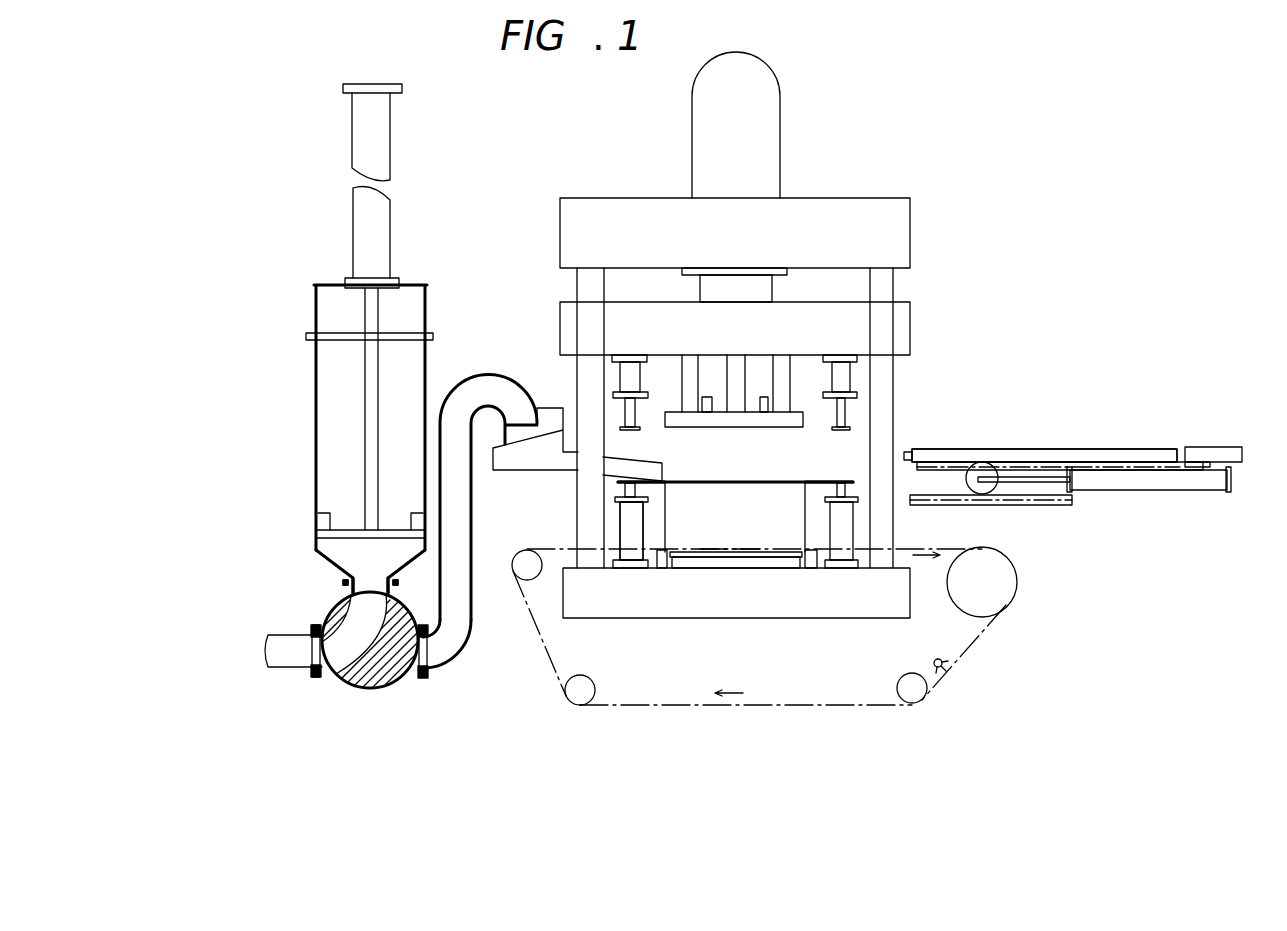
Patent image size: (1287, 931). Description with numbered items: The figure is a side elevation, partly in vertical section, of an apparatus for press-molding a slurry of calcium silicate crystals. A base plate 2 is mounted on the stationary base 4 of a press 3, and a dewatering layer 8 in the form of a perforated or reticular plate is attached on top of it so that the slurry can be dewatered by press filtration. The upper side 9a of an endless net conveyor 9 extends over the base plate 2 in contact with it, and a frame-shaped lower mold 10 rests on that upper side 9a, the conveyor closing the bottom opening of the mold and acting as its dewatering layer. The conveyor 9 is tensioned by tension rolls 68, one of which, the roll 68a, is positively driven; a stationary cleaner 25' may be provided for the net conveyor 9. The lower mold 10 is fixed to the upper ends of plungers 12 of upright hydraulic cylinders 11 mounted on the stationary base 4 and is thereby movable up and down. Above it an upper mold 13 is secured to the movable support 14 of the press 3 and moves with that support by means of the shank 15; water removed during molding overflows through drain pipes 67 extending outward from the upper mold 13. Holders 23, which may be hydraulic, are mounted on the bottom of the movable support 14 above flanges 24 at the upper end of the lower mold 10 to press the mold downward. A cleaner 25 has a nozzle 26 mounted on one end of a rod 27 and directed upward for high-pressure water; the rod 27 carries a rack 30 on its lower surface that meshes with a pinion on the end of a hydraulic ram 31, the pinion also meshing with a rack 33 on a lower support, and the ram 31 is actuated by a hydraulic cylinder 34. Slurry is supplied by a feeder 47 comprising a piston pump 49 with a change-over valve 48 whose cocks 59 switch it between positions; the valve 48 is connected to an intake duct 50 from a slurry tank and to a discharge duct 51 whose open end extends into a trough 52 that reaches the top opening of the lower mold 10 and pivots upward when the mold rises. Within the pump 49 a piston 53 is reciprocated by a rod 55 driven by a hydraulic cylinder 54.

The base plate 2 is at (688, 552).
The press 3 is at (827, 196).
The stationary base 4 is at (752, 607).
The dewatering layer 8 is at (787, 539).
The net conveyor 9 is at (552, 543).
The upper side of the net conveyor 9a is at (735, 548).
The lower mold 10 is at (730, 492).
The hydraulic cylinders 11 is at (638, 530).
The plungers 12 is at (630, 488).
The upper mold 13 is at (780, 427).
The movable support 14 is at (908, 326).
The shank 15 is at (770, 291).
The holders 23 is at (638, 402).
The flanges 24 is at (662, 478).
The cleaner 25 is at (1044, 436).
The cleaner for the net conveyor 25' is at (920, 657).
The nozzle 26 is at (908, 450).
The rod 27 is at (1005, 457).
The rack 30 is at (1075, 461).
The hydraulic ram 31 is at (1032, 483).
The rack 33 is at (1062, 503).
The hydraulic cylinder 34 is at (1177, 483).
The feeder 47 is at (334, 595).
The change-over valve 48 is at (350, 685).
The piston pump 49 is at (316, 404).
The intake duct 50 is at (295, 668).
The discharge duct 51 is at (465, 523).
The trough 52 is at (540, 470).
The piston 53 is at (392, 530).
The hydraulic cylinder 54 is at (380, 241).
The rod 55 is at (380, 403).
The cocks 59 is at (387, 663).
The drain pipes 67 is at (710, 400).
The tension rolls 68 is at (515, 560).
The driven tension roll 68a is at (1007, 587).